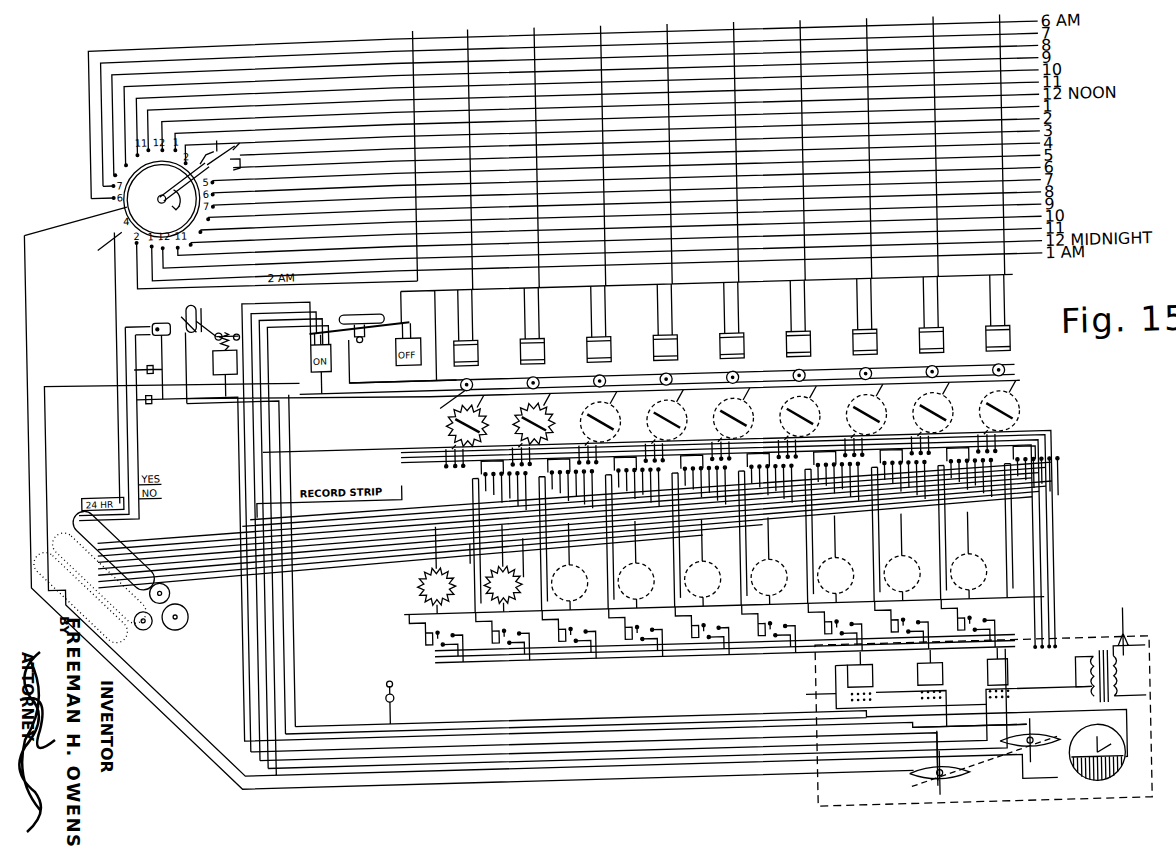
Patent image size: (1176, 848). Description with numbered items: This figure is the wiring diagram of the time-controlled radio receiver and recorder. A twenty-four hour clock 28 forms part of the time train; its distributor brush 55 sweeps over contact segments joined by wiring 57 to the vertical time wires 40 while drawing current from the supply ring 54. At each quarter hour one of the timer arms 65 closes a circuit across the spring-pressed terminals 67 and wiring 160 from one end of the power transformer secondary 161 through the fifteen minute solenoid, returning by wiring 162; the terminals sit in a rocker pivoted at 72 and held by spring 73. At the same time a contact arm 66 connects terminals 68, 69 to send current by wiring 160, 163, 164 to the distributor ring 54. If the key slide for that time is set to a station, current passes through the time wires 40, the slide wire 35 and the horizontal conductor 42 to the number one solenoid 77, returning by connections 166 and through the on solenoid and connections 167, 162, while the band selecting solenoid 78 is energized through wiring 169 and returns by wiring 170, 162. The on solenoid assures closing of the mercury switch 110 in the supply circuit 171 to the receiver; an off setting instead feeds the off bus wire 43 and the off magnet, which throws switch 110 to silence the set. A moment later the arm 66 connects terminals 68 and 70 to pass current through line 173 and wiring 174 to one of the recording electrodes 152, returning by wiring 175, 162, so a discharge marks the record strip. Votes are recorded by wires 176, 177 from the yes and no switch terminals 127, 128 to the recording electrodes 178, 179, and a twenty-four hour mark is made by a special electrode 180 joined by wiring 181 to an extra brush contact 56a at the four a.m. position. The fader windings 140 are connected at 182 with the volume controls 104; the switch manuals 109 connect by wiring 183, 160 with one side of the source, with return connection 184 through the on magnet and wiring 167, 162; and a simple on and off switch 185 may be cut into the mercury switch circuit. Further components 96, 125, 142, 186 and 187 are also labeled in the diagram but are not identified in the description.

The twenty-four hour clock 28 is at (1113, 783).
The slide wire 35 is at (250, 152).
The vertical time wires 40 is at (230, 150).
The horizontal conductor 42 is at (331, 152).
The off bus wire 43 is at (316, 180).
The current supply ring 54 is at (101, 368).
The distributor brush 55 is at (212, 143).
The extra brush contact 56a is at (95, 218).
The wiring 57 is at (217, 137).
The timer arms 65 is at (456, 162).
The contact arms 66 is at (948, 790).
The spring pressed terminals 67 is at (1030, 738).
The terminal 68 is at (931, 765).
The terminal 69 is at (950, 783).
The terminal 70 is at (950, 742).
The pivot 72 is at (368, 168).
The spring 73 is at (855, 760).
The No. 1 solenoid 77 is at (478, 337).
The band selecting solenoid 78 is at (928, 675).
The relay 96 is at (412, 588).
The volume controls 104 is at (446, 425).
The switch manuals 109 is at (460, 378).
The mercury switch 110 is at (360, 312).
The contact 125 is at (160, 311).
The yes switch terminal 127 is at (152, 320).
The no switch terminal 128 is at (152, 314).
The fader windings 140 is at (192, 294).
The drum 142 is at (36, 548).
The recording electrodes 152 is at (60, 575).
The wiring 160 is at (48, 452).
The power transformer secondary 161 is at (1086, 690).
The wiring 162 is at (256, 372).
The wiring 163 is at (895, 700).
The wiring 164 is at (33, 298).
The connections 166 is at (436, 290).
The connections 167 is at (250, 302).
The wiring 169 is at (548, 658).
The wiring 170 is at (828, 677).
The supply circuit 171 is at (790, 700).
The line 173 is at (340, 496).
The wiring 174 is at (338, 560).
The wiring 175 is at (236, 633).
The wire 176 is at (140, 445).
The wire 177 is at (137, 428).
The yes recording electrode 178 is at (52, 524).
The no recording electrode 179 is at (72, 504).
The special electrode 180 is at (82, 484).
The wiring 181 is at (117, 400).
The connection 182 is at (390, 394).
The wiring 183 is at (352, 393).
The return connection 184 is at (360, 370).
The on and off switch 185 is at (378, 683).
The contact 186 is at (472, 376).
The conductor 187 is at (438, 403).